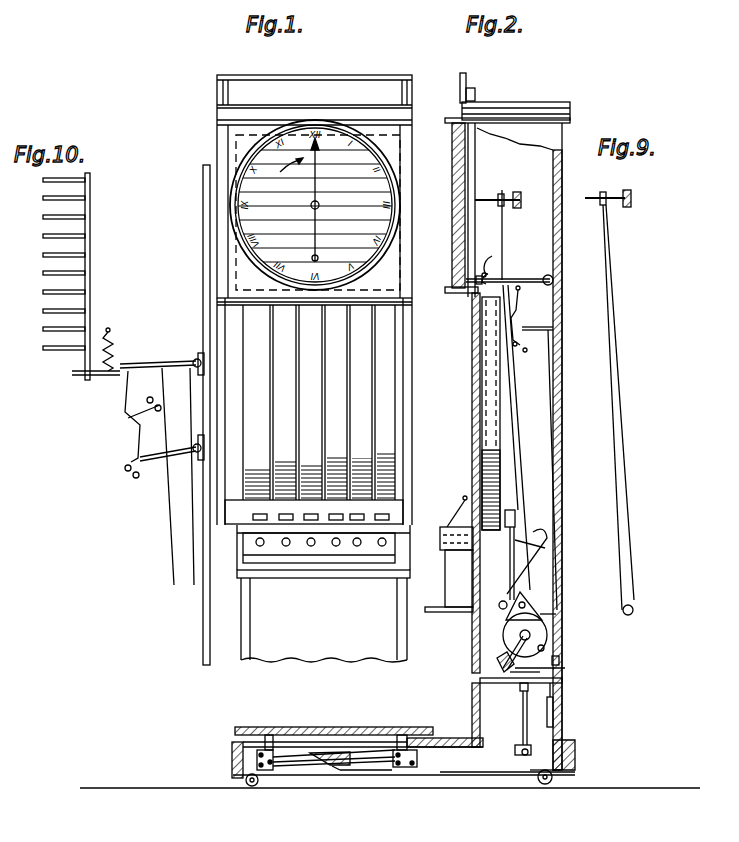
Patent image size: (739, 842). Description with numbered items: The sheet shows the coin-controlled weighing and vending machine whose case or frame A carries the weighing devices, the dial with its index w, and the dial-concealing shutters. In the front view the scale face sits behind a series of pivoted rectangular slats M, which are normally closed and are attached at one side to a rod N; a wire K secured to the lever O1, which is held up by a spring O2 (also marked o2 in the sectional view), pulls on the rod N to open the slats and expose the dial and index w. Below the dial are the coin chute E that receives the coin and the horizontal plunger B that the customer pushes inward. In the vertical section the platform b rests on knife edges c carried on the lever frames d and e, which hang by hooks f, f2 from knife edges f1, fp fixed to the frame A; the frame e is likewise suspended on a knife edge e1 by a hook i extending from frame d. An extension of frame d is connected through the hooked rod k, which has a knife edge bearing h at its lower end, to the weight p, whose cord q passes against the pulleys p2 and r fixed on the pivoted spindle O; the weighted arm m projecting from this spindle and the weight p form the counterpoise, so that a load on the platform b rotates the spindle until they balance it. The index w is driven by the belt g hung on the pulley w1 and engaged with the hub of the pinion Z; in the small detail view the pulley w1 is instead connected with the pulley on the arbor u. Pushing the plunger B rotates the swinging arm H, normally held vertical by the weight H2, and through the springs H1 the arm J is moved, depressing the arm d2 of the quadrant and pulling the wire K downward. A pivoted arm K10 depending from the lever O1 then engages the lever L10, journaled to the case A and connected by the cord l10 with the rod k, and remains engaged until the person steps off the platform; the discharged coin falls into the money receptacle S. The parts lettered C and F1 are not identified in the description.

In FIG. 1, the slats M is at (226, 185).
In FIG. 10, the slats M is at (55, 273).
In FIG. 10, the rod N is at (92, 233).
In FIG. 2, the rod N is at (464, 173).
In FIG. 1, the index w is at (317, 192).
In FIG. 2, the pulley w1 is at (498, 190).
In FIG. 9, the pulley w1 is at (608, 190).
In FIG. 1, the coin chute E is at (252, 518).
In FIG. 1, the horizontal plunger B is at (256, 543).
In FIG. 2, the horizontal plunger B is at (441, 532).
In FIG. 1, the lever O1 is at (180, 366).
In FIG. 2, the lever O1 is at (520, 282).
In FIG. 1, the spring O2 is at (110, 332).
In FIG. 1, the pivoted arm K10 is at (152, 420).
In FIG. 2, the pivoted arm K10 is at (522, 305).
In FIG. 1, the lever L10 is at (166, 460).
In FIG. 2, the lever L10 is at (556, 332).
In FIG. 1, the wire K is at (171, 515).
In FIG. 2, the wire K is at (527, 416).
In FIG. 1, the cord l10 is at (192, 536).
In FIG. 2, the cord l10 is at (556, 368).
In FIG. 1, the case A is at (232, 756).
In FIG. 2, the case A is at (456, 730).
In FIG. 1, the hooks f is at (234, 750).
In FIG. 1, the knife edge f1 is at (258, 782).
In FIG. 1, the hook f2 is at (416, 770).
In FIG. 1, the knife edge fp is at (418, 762).
In FIG. 1, the lever frame d is at (269, 748).
In FIG. 1, the platform b is at (322, 740).
In FIG. 1, the block C is at (276, 768).
In FIG. 1, the lever frame e is at (334, 766).
In FIG. 1, the knife edge e1 is at (338, 754).
In FIG. 1, the hook i is at (333, 768).
In FIG. 2, the hook i is at (525, 666).
In FIG. 1, the knife edges c is at (403, 769).
In FIG. 1, the belt g is at (408, 748).
In FIG. 2, the belt g is at (504, 223).
In FIG. 9, the belt g is at (621, 392).
In FIG. 2, the spring o2 is at (485, 259).
In FIG. 2, the compartment F1 is at (480, 450).
In FIG. 2, the swinging arm H is at (507, 548).
In FIG. 2, the springs H1 is at (532, 540).
In FIG. 2, the arm J is at (541, 535).
In FIG. 2, the pinion Z is at (532, 608).
In FIG. 2, the arm d2 is at (497, 602).
In FIG. 2, the weight H2 is at (507, 615).
In FIG. 2, the spindle O is at (518, 635).
In FIG. 2, the pulley r is at (510, 658).
In FIG. 2, the money receptacle S is at (558, 615).
In FIG. 2, the pulley p2 is at (560, 660).
In FIG. 2, the cord q is at (566, 670).
In FIG. 2, the weighted arm m is at (518, 690).
In FIG. 2, the hooked rod k is at (522, 716).
In FIG. 2, the knife edge bearing h is at (529, 753).
In FIG. 2, the weight p is at (556, 716).
In FIG. 9, the arbor u is at (636, 607).